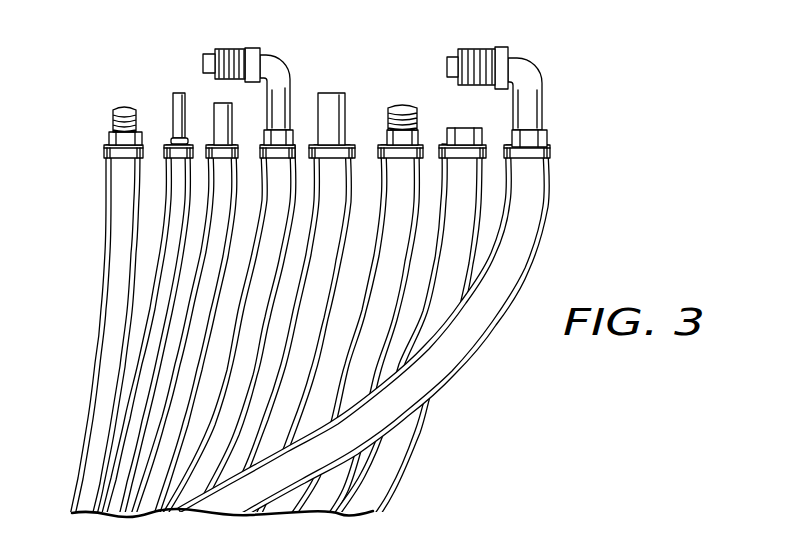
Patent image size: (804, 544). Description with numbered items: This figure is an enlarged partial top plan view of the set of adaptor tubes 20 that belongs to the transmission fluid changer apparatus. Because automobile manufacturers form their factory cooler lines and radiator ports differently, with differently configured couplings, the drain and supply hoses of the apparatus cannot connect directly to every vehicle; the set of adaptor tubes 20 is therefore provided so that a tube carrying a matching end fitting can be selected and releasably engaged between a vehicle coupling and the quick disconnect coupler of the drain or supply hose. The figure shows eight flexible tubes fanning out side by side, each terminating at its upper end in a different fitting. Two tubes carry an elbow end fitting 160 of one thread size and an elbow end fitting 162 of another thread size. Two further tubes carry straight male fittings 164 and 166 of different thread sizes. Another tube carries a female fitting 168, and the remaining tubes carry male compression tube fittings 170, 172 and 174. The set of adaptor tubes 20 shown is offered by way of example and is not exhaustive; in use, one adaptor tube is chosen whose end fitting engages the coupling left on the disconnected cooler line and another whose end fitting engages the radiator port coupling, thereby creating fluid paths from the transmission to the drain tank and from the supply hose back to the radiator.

The set of adaptor tubes 20 is at (584, 175).
The elbow end fitting 160 is at (518, 60).
The elbow end fitting 162 is at (264, 57).
The straight male fitting 164 is at (408, 106).
The straight male fitting 166 is at (117, 108).
The female fitting 168 is at (475, 120).
The male compression tube fitting 170 is at (340, 105).
The male compression tube fitting 172 is at (213, 117).
The male compression tube fitting 174 is at (174, 102).